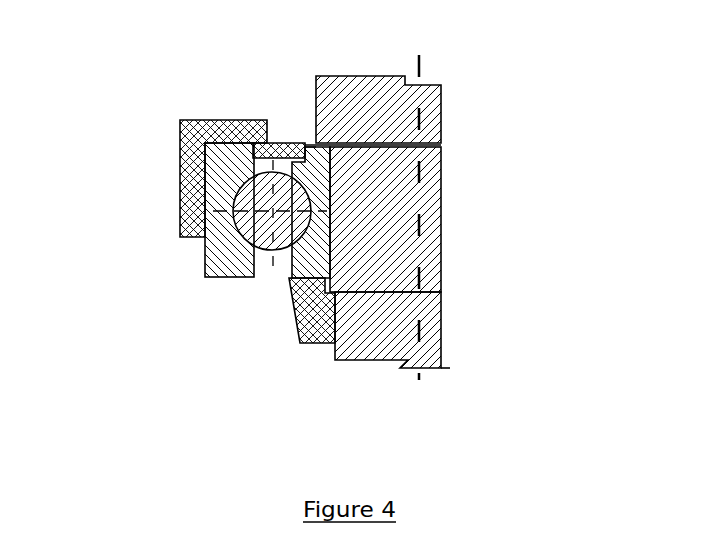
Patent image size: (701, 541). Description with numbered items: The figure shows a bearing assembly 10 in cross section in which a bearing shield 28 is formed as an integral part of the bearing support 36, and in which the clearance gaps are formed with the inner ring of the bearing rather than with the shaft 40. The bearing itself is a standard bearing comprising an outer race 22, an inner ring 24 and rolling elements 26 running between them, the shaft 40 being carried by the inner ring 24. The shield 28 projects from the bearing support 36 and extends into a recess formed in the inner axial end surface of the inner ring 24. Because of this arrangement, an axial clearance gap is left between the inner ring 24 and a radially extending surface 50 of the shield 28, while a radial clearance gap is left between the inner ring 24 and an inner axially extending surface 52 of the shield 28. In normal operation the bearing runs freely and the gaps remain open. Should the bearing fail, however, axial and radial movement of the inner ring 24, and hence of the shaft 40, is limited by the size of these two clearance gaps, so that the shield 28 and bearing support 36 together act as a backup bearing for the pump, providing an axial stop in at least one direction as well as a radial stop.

The bearing assembly 10 is at (321, 241).
The outer race 22 is at (227, 277).
The inner ring 24 is at (296, 255).
The rolling elements 26 is at (255, 227).
The bearing shield 28 is at (262, 112).
The bearing support 36 is at (193, 165).
The shaft 40 is at (380, 86).
The radially extending surface 50 is at (293, 148).
The inner axially extending surface 52 is at (305, 147).